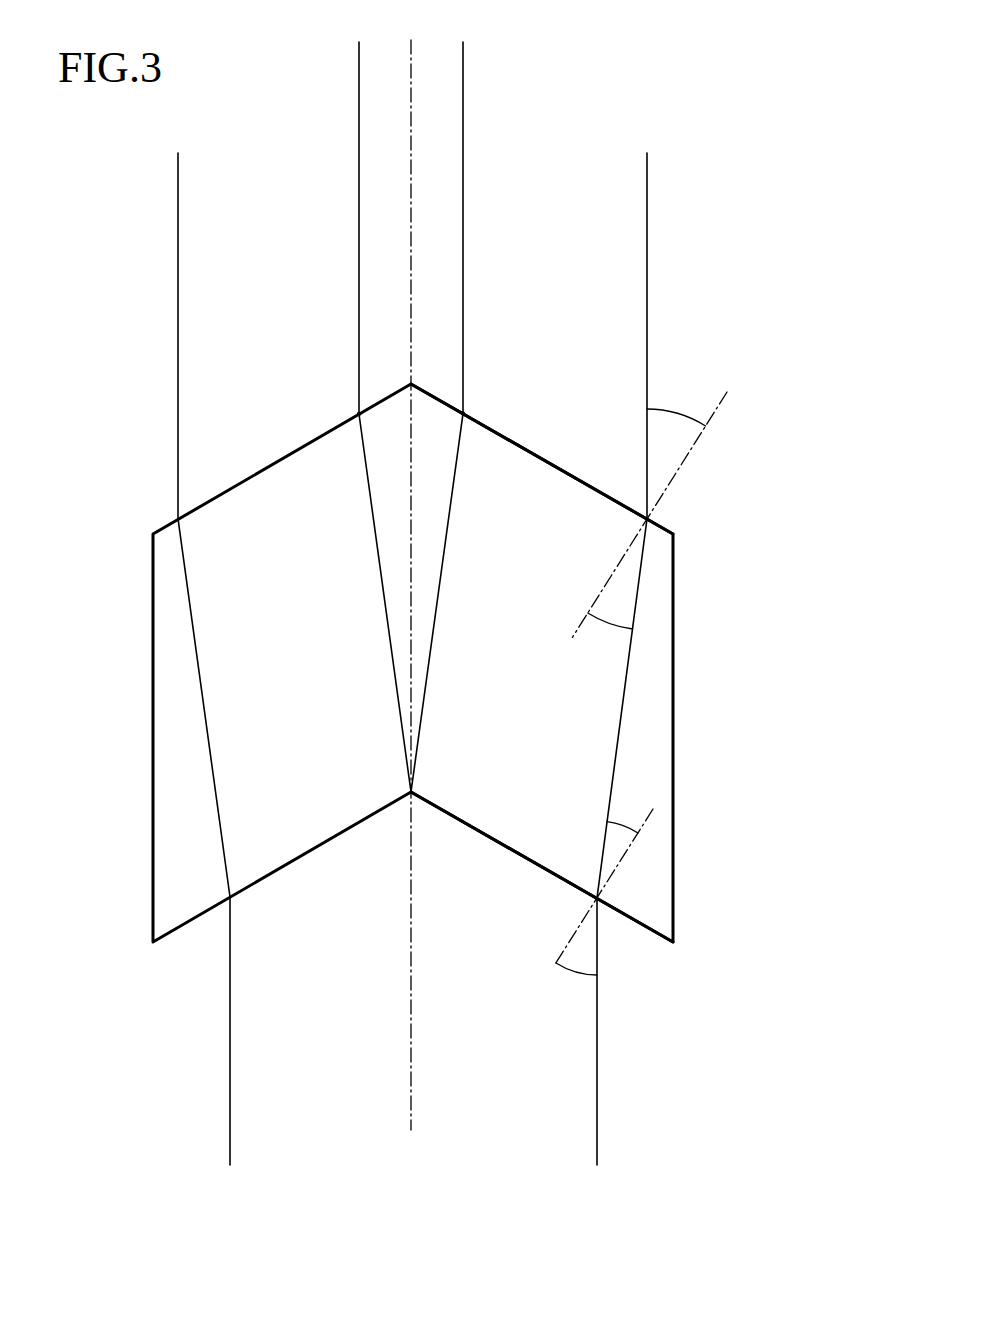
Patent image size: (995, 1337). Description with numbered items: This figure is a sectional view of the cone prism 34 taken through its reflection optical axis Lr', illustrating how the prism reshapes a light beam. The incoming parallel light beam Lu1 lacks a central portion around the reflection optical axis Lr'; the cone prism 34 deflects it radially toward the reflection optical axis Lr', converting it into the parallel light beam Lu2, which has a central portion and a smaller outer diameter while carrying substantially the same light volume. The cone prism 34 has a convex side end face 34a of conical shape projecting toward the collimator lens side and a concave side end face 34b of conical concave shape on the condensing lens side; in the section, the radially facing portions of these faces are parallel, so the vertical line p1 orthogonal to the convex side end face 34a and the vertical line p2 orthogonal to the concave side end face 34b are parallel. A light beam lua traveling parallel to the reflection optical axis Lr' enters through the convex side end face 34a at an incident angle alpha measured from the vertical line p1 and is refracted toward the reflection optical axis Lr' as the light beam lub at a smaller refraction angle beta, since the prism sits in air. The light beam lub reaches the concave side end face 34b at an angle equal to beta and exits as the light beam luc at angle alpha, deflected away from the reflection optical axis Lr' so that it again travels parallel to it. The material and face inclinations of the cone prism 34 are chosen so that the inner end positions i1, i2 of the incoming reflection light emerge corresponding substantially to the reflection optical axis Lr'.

The cone prism 34 is at (693, 693).
The convex side end face 34a is at (537, 457).
The concave side end face 34b is at (637, 923).
The light beam lua is at (646, 272).
The light beam lub is at (618, 732).
The light beam luc is at (596, 1103).
The parallel light beam Lu1 is at (668, 293).
The parallel light beam Lu2 is at (638, 1128).
The reflection optical axis Lr' is at (451, 585).
The inner end position i1 is at (467, 418).
The inner end position i2 is at (359, 417).
The vertical line p1 is at (680, 470).
The vertical line p2 is at (550, 972).